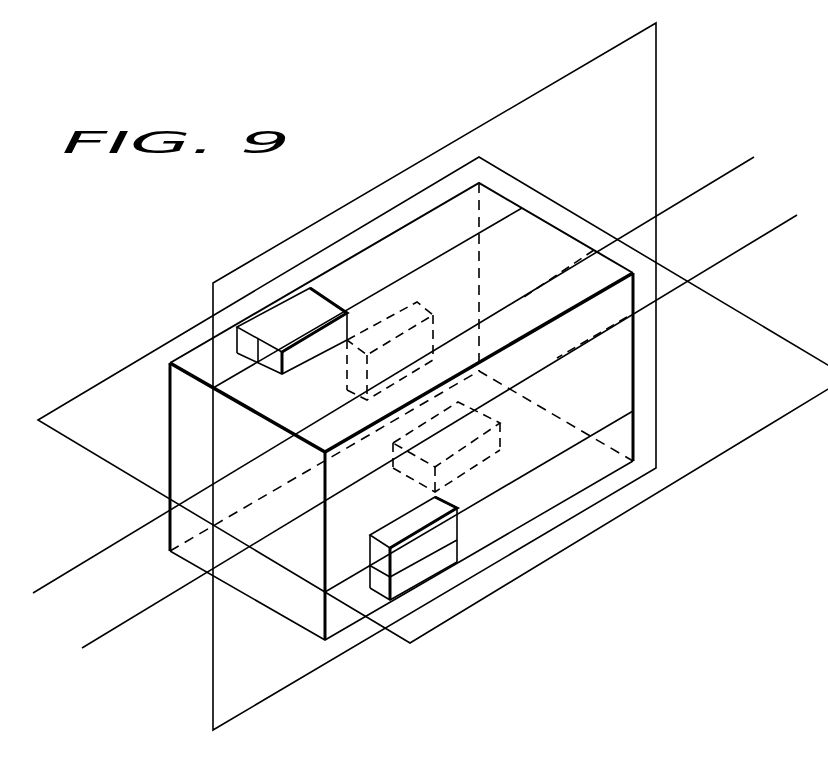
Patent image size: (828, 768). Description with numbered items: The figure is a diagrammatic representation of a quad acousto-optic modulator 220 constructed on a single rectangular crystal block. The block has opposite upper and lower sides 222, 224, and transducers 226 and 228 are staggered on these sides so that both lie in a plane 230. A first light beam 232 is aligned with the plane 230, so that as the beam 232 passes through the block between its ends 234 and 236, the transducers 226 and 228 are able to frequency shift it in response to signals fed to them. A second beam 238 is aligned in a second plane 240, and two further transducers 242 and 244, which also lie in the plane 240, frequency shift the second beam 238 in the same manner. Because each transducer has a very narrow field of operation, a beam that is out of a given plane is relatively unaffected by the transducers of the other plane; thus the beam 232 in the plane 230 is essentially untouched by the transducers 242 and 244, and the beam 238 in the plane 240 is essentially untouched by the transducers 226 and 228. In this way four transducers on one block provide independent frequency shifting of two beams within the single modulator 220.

The quad acousto-optic modulator 220 is at (452, 226).
The upper side 222 is at (337, 288).
The lower side 224 is at (556, 498).
The transducer 226 is at (277, 317).
The transducer 228 is at (458, 480).
The plane 230 is at (644, 70).
The first light beam 232 is at (721, 176).
The end 234 is at (180, 390).
The end 236 is at (526, 292).
The second beam 238 is at (791, 220).
The second plane 240 is at (87, 412).
The transducer 242 is at (402, 578).
The transducer 244 is at (417, 302).